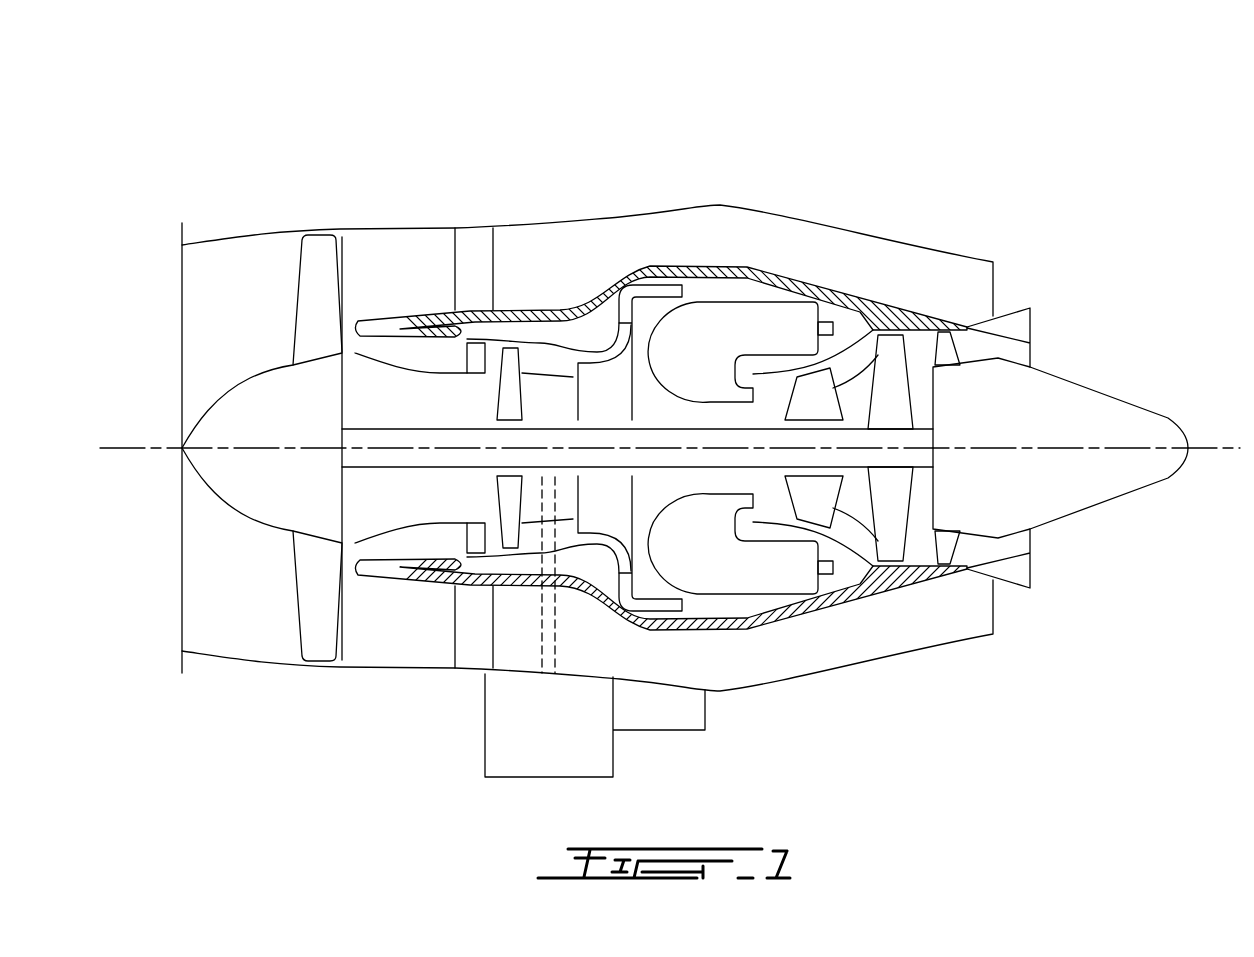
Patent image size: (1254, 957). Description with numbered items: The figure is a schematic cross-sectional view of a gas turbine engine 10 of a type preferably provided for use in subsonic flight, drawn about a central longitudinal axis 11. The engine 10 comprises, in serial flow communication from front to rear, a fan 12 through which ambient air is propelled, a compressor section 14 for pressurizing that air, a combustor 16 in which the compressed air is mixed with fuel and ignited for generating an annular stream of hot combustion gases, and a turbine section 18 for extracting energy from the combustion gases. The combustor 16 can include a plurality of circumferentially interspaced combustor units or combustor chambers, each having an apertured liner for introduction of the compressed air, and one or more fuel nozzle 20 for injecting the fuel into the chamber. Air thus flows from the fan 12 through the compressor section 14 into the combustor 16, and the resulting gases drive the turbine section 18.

The gas turbine engine 10 is at (868, 163).
The central axis 11 is at (1220, 448).
The fan 12 is at (315, 585).
The compressor section 14 is at (540, 360).
The combustor 16 is at (735, 322).
The turbine section 18 is at (855, 507).
The fuel nozzle 20 is at (832, 324).